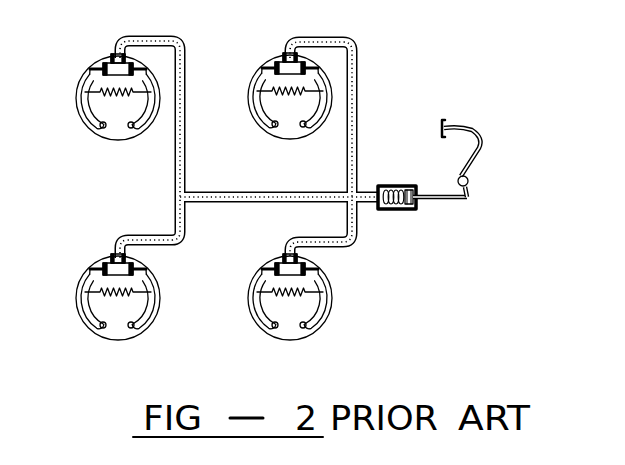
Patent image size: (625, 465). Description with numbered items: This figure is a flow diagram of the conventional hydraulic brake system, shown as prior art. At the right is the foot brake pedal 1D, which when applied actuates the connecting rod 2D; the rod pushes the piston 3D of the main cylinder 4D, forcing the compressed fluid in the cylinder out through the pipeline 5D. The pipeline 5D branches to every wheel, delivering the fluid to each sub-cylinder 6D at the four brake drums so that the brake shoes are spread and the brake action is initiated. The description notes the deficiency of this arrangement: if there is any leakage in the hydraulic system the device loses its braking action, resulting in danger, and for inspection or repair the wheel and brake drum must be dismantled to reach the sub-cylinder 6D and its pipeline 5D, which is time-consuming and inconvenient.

The brake pedal 1D is at (444, 122).
The push rod 2D is at (433, 202).
The master cylinder piston 3D is at (409, 210).
The master cylinder 4D is at (386, 185).
The brake fluid line 5D is at (357, 92).
The wheel cylinder / drum brake 6D is at (283, 57).